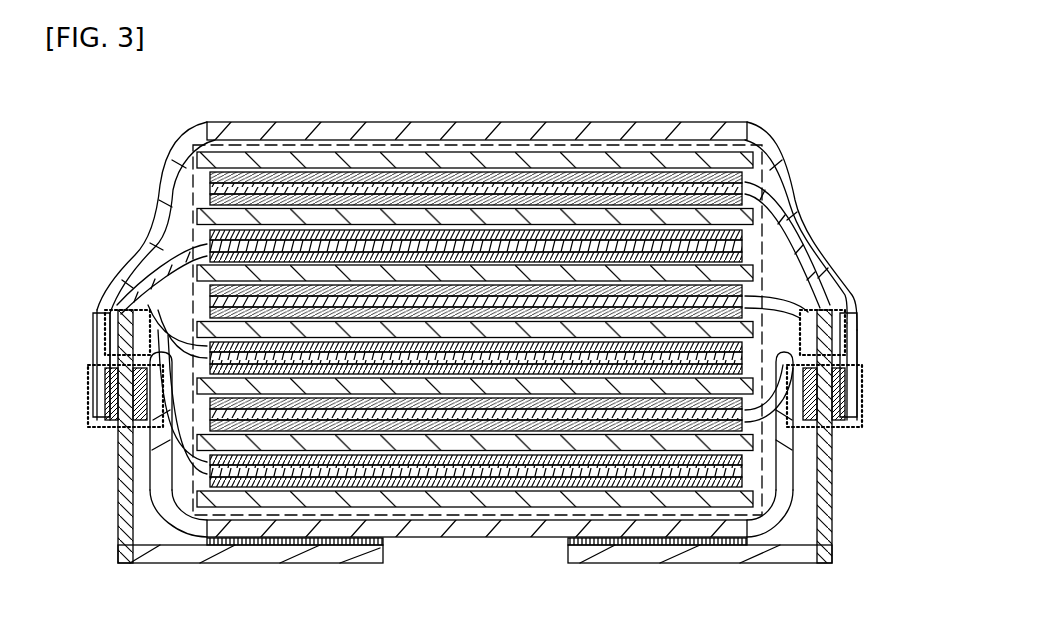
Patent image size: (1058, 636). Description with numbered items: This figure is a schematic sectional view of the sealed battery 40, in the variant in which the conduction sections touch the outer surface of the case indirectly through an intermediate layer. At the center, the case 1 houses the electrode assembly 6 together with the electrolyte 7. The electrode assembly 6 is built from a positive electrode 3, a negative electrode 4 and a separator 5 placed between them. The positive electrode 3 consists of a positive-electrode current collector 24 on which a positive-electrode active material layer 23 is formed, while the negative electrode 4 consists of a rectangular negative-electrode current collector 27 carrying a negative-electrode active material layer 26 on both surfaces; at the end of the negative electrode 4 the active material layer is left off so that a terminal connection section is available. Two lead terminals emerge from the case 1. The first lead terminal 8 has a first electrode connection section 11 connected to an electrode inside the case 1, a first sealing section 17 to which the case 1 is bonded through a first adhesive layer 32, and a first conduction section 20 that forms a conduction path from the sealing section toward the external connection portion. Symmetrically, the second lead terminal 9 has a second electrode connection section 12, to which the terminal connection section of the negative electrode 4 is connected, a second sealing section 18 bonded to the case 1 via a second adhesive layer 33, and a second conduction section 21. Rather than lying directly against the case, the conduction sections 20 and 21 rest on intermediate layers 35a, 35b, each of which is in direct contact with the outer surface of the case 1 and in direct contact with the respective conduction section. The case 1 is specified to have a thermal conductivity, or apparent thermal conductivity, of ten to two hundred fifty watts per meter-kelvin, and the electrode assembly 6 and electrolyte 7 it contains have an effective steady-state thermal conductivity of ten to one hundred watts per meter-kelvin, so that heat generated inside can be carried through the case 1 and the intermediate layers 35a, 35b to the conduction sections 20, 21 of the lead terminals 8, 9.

The case 1 is at (381, 122).
The positive electrode 3 is at (403, 398).
The negative electrode 4 is at (561, 285).
The separator 5 is at (287, 222).
The electrode assembly 6 is at (613, 145).
The electrolyte 7 is at (183, 195).
The first lead terminal 8 is at (125, 512).
The second lead terminal 9 is at (790, 552).
The first electrode connection section 11 is at (100, 340).
The second electrode connection section 12 is at (850, 328).
The first sealing section 17 is at (92, 402).
The second sealing section 18 is at (862, 392).
The first conduction section 20 is at (196, 552).
The second conduction section 21 is at (645, 550).
The positive-electrode active material layer 23 is at (207, 252).
The positive-electrode current collector 24 is at (195, 240).
The negative-electrode active material layer 26 is at (512, 176).
The negative-electrode current collector 27 is at (548, 186).
The first adhesive layer 32 is at (95, 366).
The second adhesive layer 33 is at (845, 368).
The intermediate layer 35a is at (272, 548).
The intermediate layer 35b is at (726, 548).
The sealed battery 40 is at (786, 100).